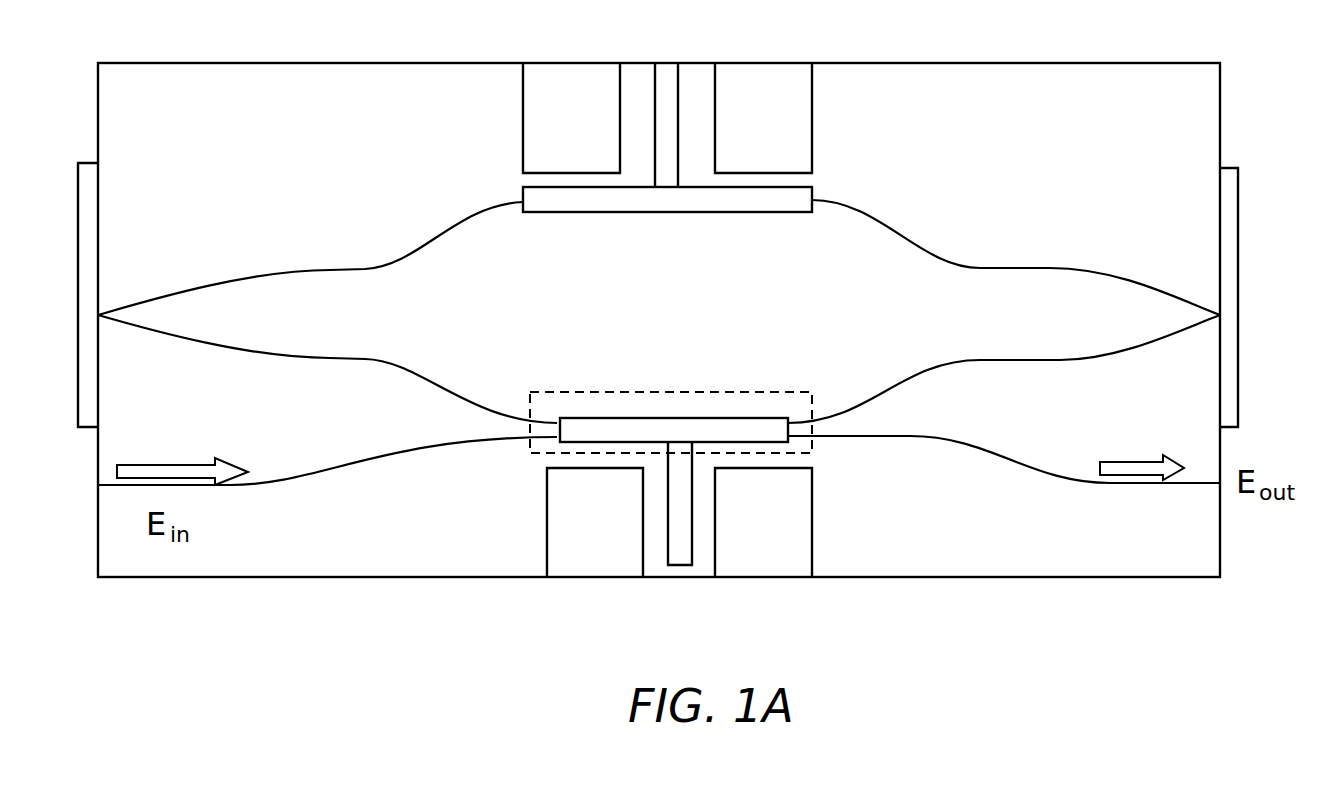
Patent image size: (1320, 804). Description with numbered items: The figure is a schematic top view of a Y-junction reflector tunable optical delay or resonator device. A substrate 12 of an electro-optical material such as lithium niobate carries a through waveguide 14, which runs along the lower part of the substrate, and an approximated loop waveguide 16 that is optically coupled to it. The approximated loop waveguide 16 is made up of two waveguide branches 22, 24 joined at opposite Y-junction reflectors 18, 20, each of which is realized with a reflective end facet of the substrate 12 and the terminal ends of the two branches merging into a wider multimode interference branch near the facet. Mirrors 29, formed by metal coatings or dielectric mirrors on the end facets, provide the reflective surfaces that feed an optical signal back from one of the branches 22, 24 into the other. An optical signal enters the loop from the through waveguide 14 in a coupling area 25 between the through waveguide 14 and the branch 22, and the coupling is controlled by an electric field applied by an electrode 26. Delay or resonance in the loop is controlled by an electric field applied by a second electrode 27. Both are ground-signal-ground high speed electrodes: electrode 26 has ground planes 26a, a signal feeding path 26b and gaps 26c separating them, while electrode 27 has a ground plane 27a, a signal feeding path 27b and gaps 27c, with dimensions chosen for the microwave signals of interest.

The substrate 12 is at (1058, 63).
The through waveguide 14 is at (397, 445).
The approximated loop waveguide 16 is at (690, 259).
The Y-junction reflector 18 is at (143, 320).
The Y-junction reflector 20 is at (1135, 314).
The waveguide branch 22 is at (432, 380).
The waveguide branch 24 is at (468, 226).
The coupling area 25 is at (680, 392).
The electrode 26 is at (713, 532).
The ground planes 26a is at (577, 550).
The signal feeding path 26b is at (680, 550).
The gaps 26c is at (657, 548).
The electrode 27 is at (636, 137).
The ground plane 27a is at (575, 97).
The signal feeding path 27b is at (667, 160).
The gaps 27c is at (695, 160).
The mirrors 29 is at (90, 207).